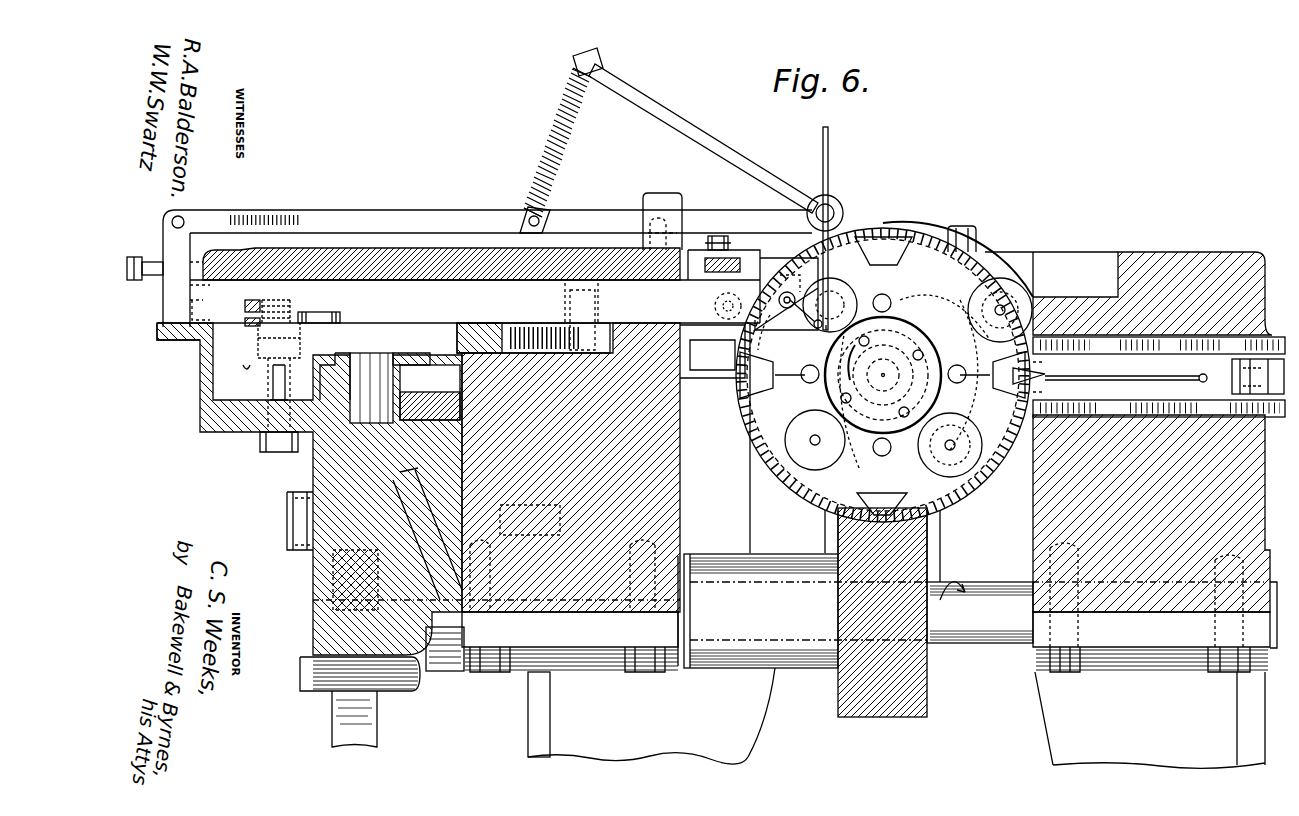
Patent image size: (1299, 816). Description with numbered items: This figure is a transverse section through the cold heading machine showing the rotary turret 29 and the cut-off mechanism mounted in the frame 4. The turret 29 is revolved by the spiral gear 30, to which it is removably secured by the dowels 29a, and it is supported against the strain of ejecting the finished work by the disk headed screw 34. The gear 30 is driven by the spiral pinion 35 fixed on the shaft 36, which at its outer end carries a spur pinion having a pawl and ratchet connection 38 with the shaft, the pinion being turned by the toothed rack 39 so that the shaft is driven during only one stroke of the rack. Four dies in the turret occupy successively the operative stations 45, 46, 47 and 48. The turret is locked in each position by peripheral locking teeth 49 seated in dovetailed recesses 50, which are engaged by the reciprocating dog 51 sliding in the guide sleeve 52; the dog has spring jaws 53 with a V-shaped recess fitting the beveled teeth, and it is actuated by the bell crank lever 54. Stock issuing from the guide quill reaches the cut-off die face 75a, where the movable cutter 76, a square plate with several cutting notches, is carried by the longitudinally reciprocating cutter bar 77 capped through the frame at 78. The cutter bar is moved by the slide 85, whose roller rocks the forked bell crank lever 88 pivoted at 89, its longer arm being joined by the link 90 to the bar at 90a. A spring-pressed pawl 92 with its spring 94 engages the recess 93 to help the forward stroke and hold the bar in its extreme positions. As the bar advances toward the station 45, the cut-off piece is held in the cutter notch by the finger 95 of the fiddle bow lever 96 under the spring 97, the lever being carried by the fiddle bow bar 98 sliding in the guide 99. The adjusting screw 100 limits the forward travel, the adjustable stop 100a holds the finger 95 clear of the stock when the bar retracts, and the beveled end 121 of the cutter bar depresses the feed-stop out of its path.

The frame 4 is at (1245, 498).
The rotary turret 29 is at (758, 471).
The dowels 29a is at (961, 369).
The spiral gear 30 is at (902, 242).
The disk headed screw 34 is at (883, 375).
The spiral pinion 35 is at (928, 668).
The shaft 36 is at (855, 611).
The pawl and ratchet connection 38 is at (455, 672).
The toothed rack 39 is at (335, 580).
The operative station 45 is at (838, 300).
The operative station 46 is at (803, 420).
The operative station 47 is at (888, 454).
The operative station 48 is at (932, 311).
The locking teeth 49 is at (748, 386).
The dovetailed grooves or recesses 50 is at (806, 376).
The locking device or dog 51 is at (1159, 356).
The guide sleeve 52 is at (1159, 407).
The spring jaws 53 is at (1048, 383).
The bell crank lever 54 is at (1258, 376).
The cut-off die face 75a is at (716, 306).
The movable cutter 76 is at (765, 282).
The cutter bar 77 is at (458, 301).
The cap 78 is at (490, 264).
The slide 85 is at (442, 415).
The bell crank lever or rocker 88 is at (417, 357).
The pivot 89 is at (357, 362).
The link 90 is at (492, 333).
The connection point on cutter bar 90a is at (568, 300).
The spring-pressed pawl 92 is at (313, 322).
The recess 93 is at (345, 318).
The spring 94 is at (298, 300).
The finger 95 is at (830, 174).
The fiddle bow lever 96 is at (706, 136).
The spring 97 is at (572, 131).
The fiddle bow bar 98 is at (406, 220).
The guide 99 is at (660, 195).
The adjusting screw 100 is at (141, 258).
The adjustable stop 100a is at (714, 238).
The beveled end of cutter bar 121 is at (800, 330).